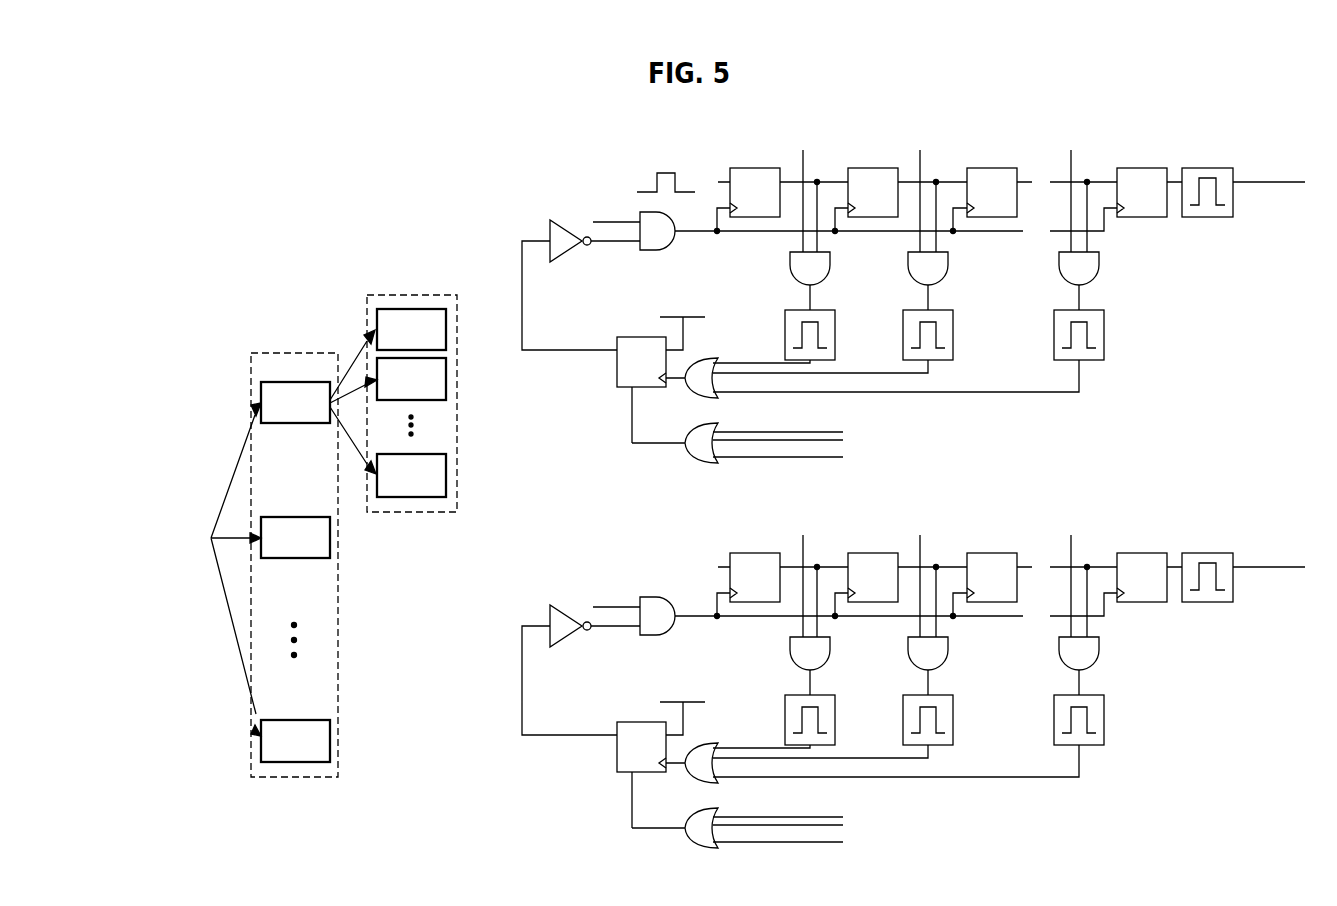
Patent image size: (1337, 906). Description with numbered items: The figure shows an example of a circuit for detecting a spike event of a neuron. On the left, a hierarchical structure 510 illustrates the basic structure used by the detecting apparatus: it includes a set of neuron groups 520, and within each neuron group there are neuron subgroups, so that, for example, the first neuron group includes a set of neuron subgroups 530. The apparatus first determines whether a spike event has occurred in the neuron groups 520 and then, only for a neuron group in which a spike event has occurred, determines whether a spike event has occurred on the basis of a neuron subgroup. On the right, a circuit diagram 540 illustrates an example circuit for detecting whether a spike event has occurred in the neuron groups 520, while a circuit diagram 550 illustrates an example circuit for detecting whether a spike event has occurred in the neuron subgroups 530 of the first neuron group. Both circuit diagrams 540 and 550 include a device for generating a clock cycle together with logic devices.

The hierarchical structure 510 is at (314, 287).
The neuron groups SDB0, SDB1, . . . SDBn 520 is at (295, 777).
The neuron subgroups SDC0, SDC1, . . . SDCn 530 is at (412, 512).
The circuit diagram 540 is at (605, 143).
The circuit diagram 550 is at (605, 528).